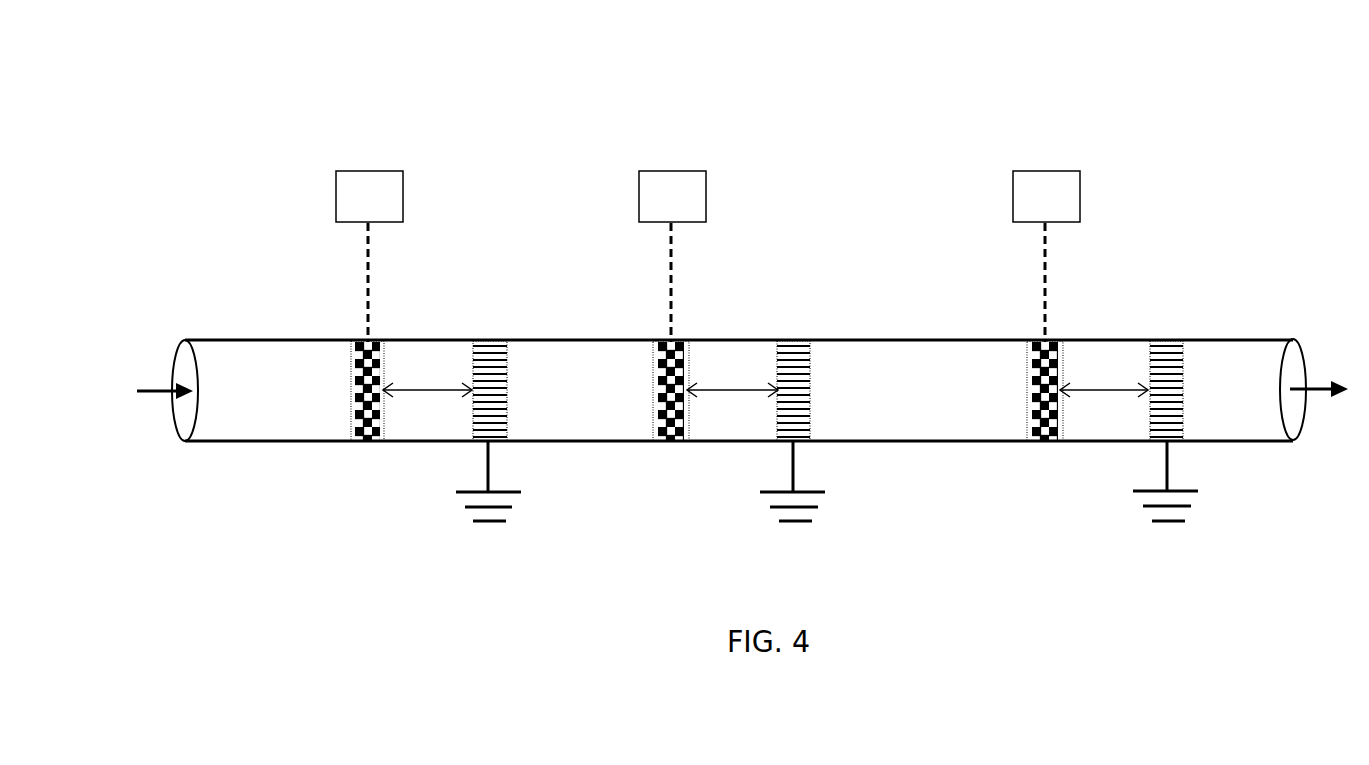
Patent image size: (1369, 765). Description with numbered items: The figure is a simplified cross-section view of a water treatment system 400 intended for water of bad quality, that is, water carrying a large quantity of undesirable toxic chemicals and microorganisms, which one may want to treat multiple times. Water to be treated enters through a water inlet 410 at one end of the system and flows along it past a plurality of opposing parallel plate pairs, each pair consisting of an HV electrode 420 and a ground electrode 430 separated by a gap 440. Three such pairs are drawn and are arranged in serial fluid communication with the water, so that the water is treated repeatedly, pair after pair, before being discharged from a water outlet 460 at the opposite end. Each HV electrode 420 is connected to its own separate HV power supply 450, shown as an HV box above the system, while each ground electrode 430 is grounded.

The water treatment system 400 is at (337, 77).
The water inlet 410 is at (270, 340).
The HV electrode 420 is at (353, 393).
The ground electrode 430 is at (490, 340).
The gap 440 is at (423, 390).
The HV power supply 450 is at (403, 195).
The water outlet 460 is at (1265, 338).